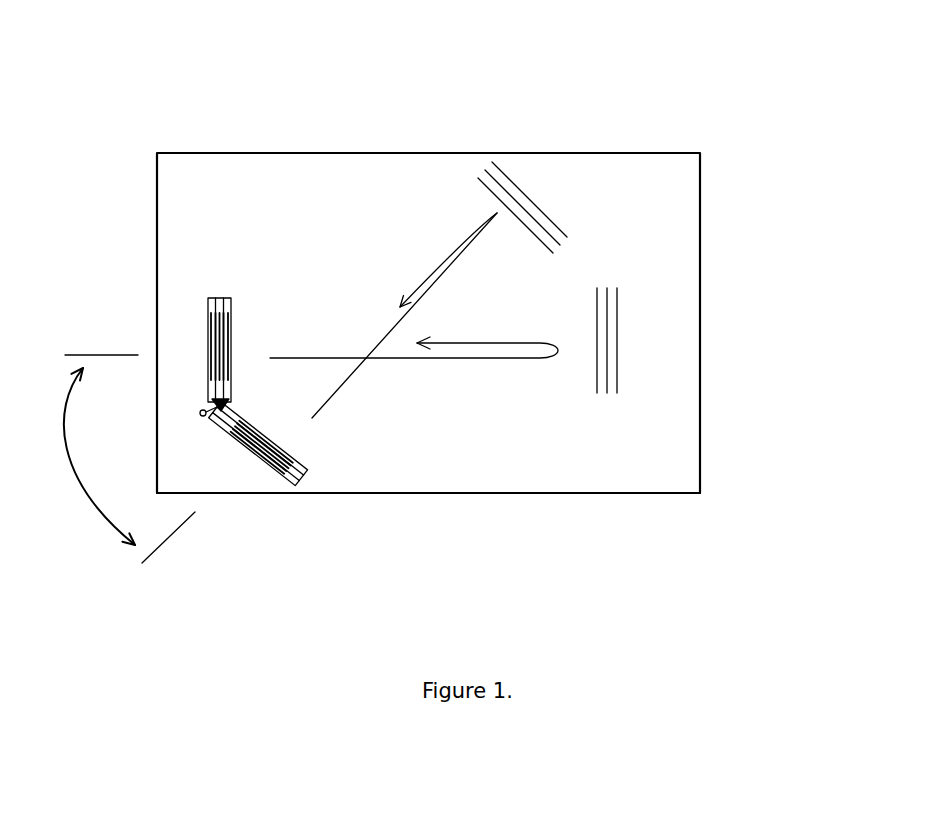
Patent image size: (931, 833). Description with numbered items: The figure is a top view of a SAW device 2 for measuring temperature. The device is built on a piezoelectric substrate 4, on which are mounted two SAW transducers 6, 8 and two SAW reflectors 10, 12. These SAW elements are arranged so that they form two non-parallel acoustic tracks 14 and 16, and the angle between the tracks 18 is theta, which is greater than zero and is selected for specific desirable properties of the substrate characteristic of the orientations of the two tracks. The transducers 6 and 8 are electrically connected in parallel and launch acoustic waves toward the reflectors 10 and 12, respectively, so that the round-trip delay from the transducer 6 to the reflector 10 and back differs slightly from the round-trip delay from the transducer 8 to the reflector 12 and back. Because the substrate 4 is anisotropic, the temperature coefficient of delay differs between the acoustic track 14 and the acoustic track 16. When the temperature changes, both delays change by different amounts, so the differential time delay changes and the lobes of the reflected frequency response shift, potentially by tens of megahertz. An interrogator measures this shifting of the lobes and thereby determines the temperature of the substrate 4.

The SAW device 2 is at (673, 138).
The piezoelectric substrate 4 is at (642, 497).
The SAW transducer 6 is at (198, 347).
The SAW transducer 8 is at (253, 459).
The SAW reflector 10 is at (628, 362).
The SAW reflector 12 is at (537, 185).
The acoustic track 14 is at (453, 368).
The acoustic track 16 is at (410, 270).
The angle between tracks 18 is at (54, 522).